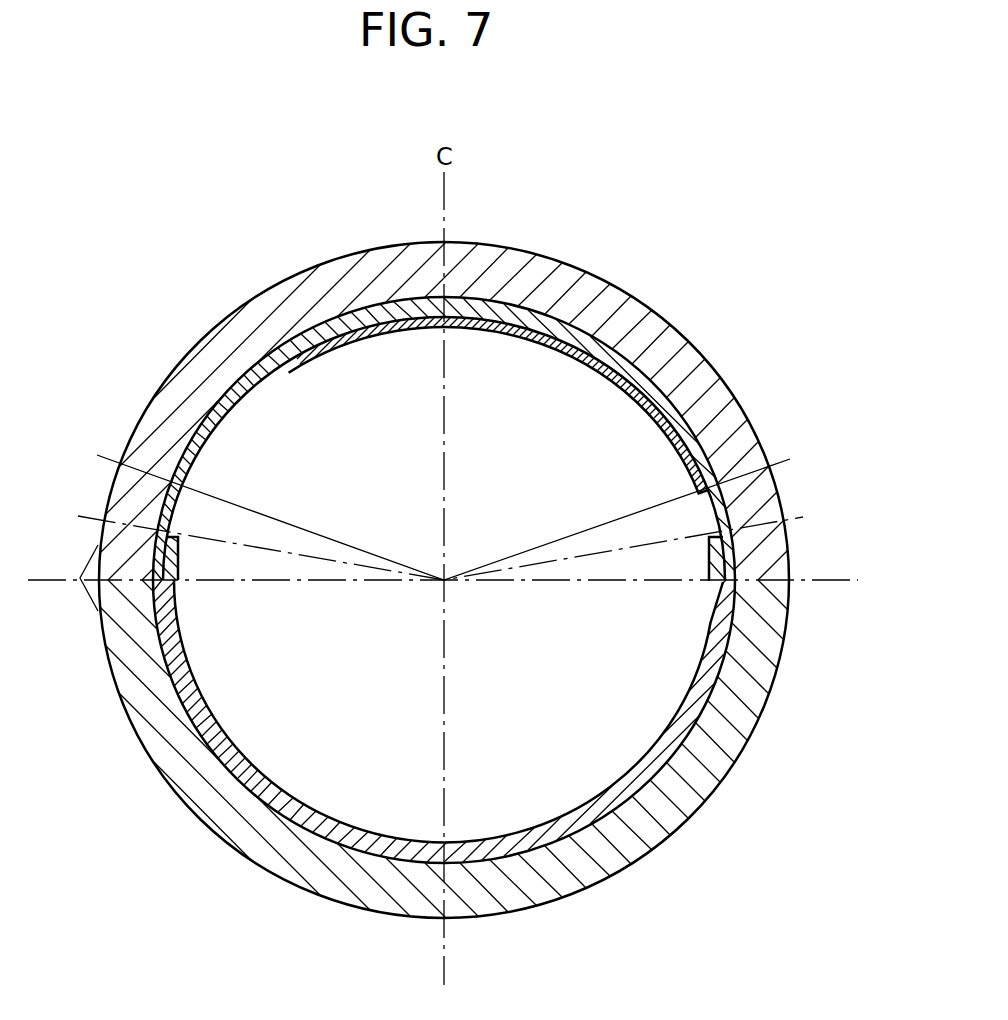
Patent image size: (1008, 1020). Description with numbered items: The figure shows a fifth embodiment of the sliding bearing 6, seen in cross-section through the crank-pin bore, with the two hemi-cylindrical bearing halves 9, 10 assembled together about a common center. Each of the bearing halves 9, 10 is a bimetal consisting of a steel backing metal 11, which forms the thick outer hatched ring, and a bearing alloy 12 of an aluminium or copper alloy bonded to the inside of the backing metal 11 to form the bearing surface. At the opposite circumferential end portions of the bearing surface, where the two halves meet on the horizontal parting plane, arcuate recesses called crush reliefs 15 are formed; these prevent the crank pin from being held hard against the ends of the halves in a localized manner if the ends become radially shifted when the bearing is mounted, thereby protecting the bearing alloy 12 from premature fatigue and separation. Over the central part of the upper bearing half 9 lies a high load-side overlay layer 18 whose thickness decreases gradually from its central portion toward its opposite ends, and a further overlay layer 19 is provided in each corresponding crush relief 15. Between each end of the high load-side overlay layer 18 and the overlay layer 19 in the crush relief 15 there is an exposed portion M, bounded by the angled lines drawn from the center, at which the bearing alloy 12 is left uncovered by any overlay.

The sliding bearing 6 is at (465, 557).
The bearing half 9 is at (667, 322).
The bearing half 10 is at (626, 873).
The backing metal 11 is at (597, 290).
The bearing alloy 12 is at (683, 433).
The crush relief 15 is at (178, 552).
The high load-side overlay layer 18 is at (350, 322).
The overlay layer 19 is at (713, 552).
The portions where bearing alloy is exposed M is at (633, 547).